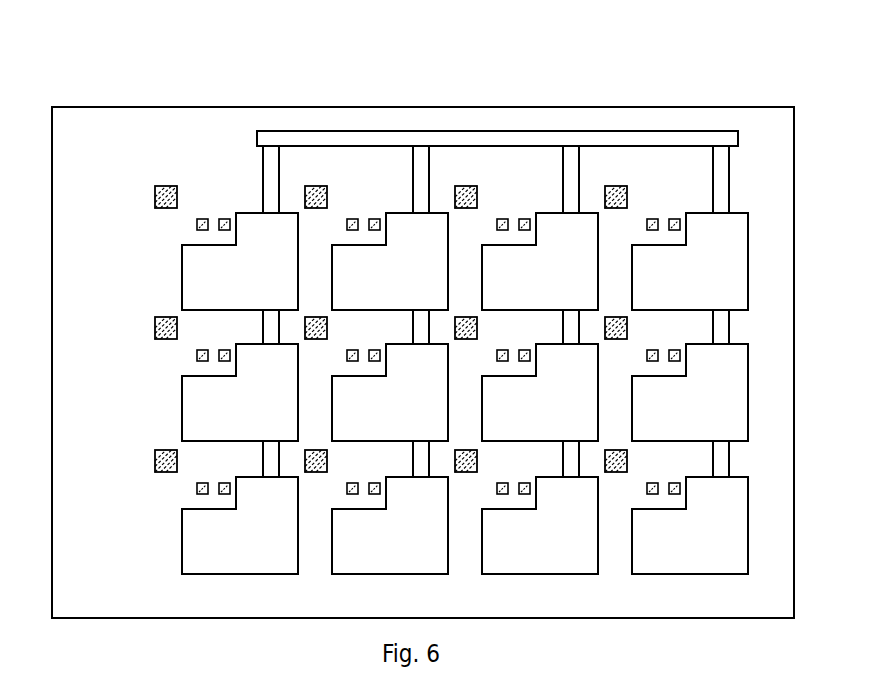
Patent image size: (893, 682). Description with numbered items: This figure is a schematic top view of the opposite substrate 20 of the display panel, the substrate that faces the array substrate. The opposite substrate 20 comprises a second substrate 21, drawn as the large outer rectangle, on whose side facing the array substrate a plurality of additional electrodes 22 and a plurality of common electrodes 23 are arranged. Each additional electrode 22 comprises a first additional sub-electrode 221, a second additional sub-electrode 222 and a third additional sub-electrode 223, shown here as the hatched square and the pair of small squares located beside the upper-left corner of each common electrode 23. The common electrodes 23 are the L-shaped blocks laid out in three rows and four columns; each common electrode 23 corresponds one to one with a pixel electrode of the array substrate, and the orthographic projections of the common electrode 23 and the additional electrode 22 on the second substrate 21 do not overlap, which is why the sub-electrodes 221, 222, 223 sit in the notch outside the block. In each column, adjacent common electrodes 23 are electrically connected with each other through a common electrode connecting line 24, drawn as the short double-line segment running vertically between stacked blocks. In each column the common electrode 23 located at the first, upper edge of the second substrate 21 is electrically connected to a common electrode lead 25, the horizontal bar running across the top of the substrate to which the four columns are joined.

The opposite substrate 20 is at (130, 39).
The second substrate 21 is at (78, 127).
The additional electrode 22 is at (252, 152).
The first additional sub-electrode 221 is at (156, 189).
The second additional sub-electrode 222 is at (200, 220).
The third additional sub-electrode 223 is at (224, 219).
The common electrode 23 is at (203, 284).
The common electrode connecting line 24 is at (717, 339).
The common electrode lead 25 is at (728, 133).